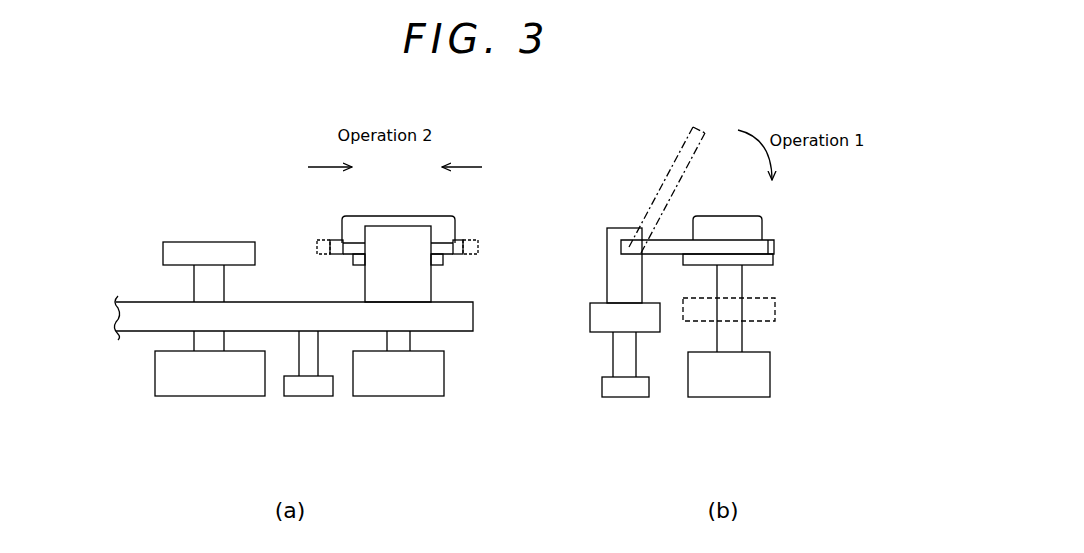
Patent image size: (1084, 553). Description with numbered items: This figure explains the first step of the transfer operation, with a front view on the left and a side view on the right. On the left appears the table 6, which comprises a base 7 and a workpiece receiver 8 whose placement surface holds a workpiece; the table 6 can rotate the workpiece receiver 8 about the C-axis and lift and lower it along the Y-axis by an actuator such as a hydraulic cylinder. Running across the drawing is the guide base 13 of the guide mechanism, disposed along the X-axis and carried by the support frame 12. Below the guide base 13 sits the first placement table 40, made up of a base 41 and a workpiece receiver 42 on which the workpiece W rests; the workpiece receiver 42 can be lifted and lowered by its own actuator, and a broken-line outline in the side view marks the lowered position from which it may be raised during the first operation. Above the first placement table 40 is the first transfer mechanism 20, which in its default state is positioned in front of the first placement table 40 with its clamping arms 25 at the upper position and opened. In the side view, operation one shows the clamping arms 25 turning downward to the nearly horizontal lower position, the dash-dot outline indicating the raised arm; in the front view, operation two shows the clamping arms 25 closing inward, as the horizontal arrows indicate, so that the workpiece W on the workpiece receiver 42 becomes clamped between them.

The table 6 is at (131, 268).
The base 7 is at (157, 382).
The workpiece receiver 8 is at (173, 246).
The support frame 12 is at (305, 388).
The guide base 13 is at (475, 320).
The first transfer mechanism 20 is at (353, 287).
The clamping arms 25 is at (337, 241).
The first placement table 40 is at (829, 315).
The base 41 is at (440, 373).
The workpiece receiver 42 is at (445, 259).
The workpiece W is at (404, 217).